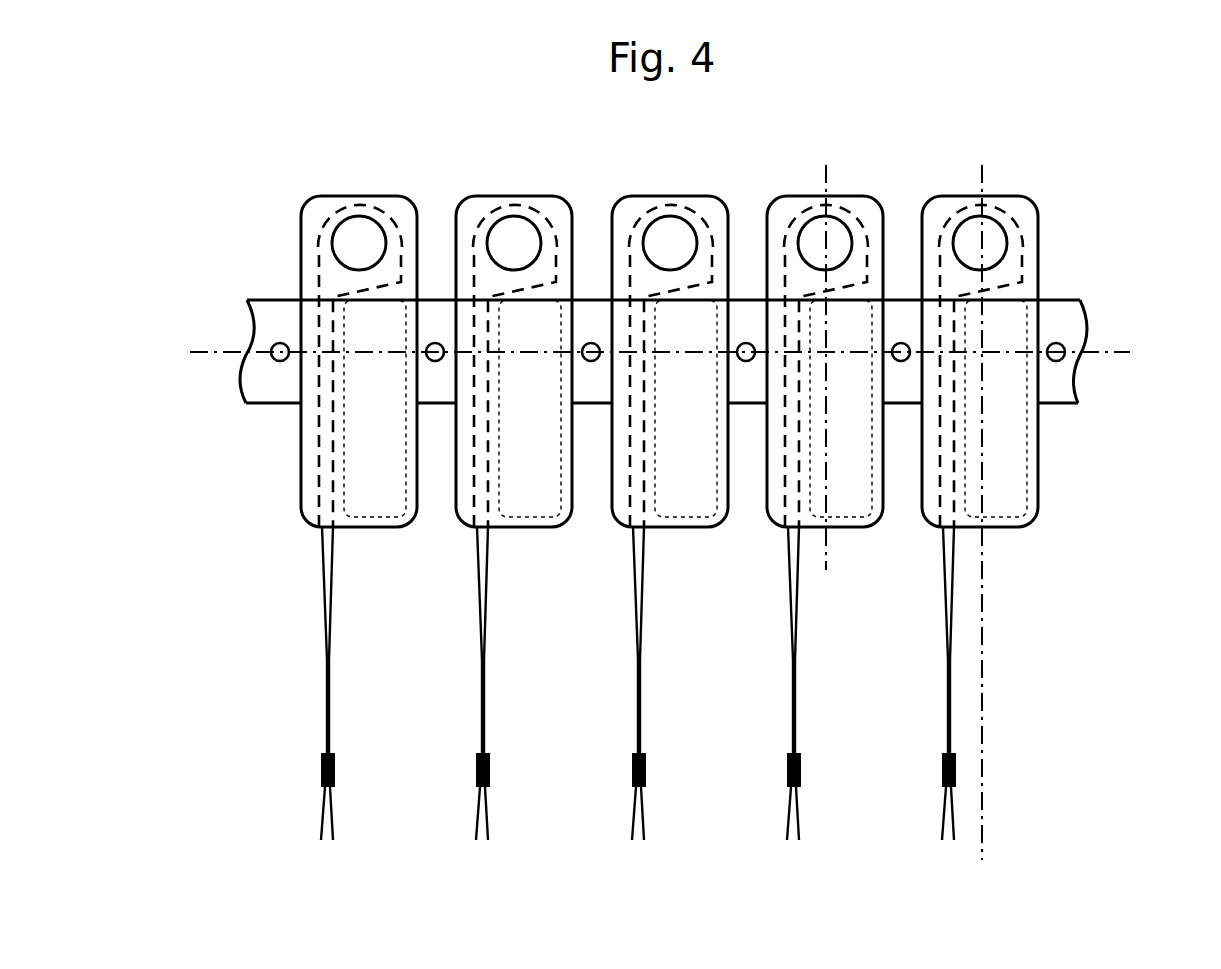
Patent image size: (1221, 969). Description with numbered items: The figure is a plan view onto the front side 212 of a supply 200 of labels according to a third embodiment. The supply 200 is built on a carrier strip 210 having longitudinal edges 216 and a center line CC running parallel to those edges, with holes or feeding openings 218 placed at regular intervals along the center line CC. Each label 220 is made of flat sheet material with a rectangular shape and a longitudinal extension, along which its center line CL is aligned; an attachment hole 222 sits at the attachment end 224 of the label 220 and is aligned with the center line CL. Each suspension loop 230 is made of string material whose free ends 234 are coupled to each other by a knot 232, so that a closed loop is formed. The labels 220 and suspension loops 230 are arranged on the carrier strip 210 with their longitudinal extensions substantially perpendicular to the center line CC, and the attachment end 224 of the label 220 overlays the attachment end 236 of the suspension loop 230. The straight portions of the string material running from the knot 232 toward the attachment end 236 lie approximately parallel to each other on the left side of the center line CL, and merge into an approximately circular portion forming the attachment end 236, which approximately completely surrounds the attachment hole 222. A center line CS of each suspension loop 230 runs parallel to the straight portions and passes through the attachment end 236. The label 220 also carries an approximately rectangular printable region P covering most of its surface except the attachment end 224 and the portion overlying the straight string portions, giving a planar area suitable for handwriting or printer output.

The supply 200 is at (487, 145).
The carrier strip 210 is at (1140, 416).
The front side 212 is at (1078, 322).
The longitudinal edges 216 is at (1061, 302).
The holes or feeding openings 218 is at (1057, 343).
The label 220 is at (705, 156).
The attachment hole 222 is at (818, 214).
The attachment end 224 is at (787, 198).
The attachment end 236 is at (1008, 213).
The suspension loop 230 is at (1175, 590).
The knot 232 is at (957, 768).
The free ends 234 is at (954, 818).
The center line CC is at (208, 352).
The center line CL is at (828, 178).
The center line CS is at (985, 168).
The printable region P is at (860, 512).